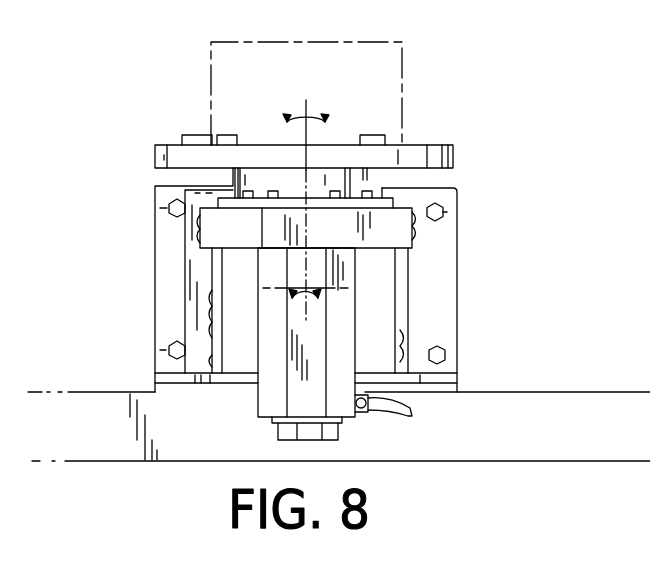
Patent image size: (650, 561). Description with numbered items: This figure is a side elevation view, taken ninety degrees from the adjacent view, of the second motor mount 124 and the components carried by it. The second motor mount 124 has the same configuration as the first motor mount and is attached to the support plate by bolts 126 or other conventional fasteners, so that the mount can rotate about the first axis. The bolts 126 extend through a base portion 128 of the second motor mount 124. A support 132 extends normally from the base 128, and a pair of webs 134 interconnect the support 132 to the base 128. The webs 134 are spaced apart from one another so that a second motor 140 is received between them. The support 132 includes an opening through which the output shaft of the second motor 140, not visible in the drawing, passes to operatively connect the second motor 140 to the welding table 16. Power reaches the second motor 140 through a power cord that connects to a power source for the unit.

The welding table 16 is at (443, 160).
The second motor mount 124 is at (462, 332).
The bolts 126 is at (447, 212).
The base portion 128 is at (165, 243).
The support 132 is at (400, 238).
The webs 134 is at (215, 295).
The second motor 140 is at (272, 402).